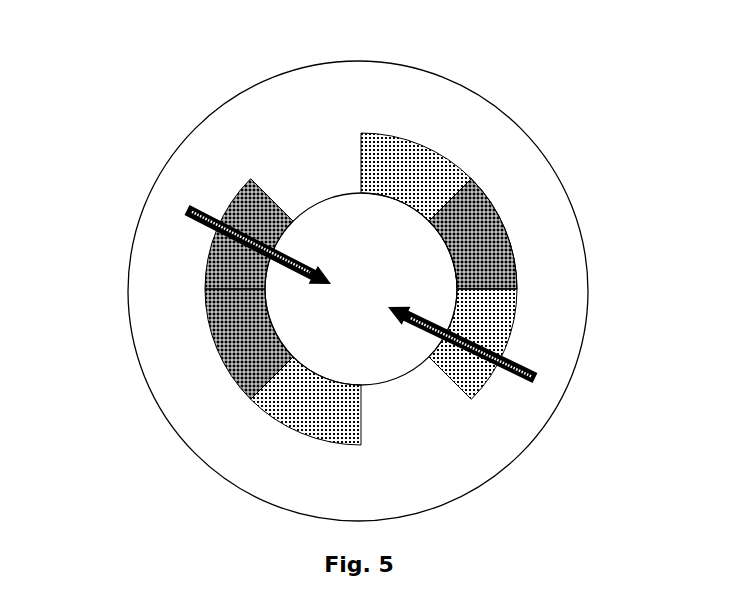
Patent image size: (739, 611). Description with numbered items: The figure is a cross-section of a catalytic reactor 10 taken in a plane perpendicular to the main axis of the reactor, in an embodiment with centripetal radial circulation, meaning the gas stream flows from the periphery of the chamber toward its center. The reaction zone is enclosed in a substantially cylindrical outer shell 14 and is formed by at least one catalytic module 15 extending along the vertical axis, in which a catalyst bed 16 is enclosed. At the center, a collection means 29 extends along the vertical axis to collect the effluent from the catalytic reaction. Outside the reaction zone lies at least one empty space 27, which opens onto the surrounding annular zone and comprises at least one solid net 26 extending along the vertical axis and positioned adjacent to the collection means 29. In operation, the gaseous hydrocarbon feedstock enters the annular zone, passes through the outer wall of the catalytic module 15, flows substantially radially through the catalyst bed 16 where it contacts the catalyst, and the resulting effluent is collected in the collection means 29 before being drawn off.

The catalytic reactor 10 is at (130, 147).
The outer shell 14 is at (140, 366).
The catalytic module 15 is at (208, 323).
The catalyst bed 16 is at (485, 236).
The solid net 26 is at (403, 380).
The empty space 27 is at (313, 183).
The collection means 29 is at (363, 272).